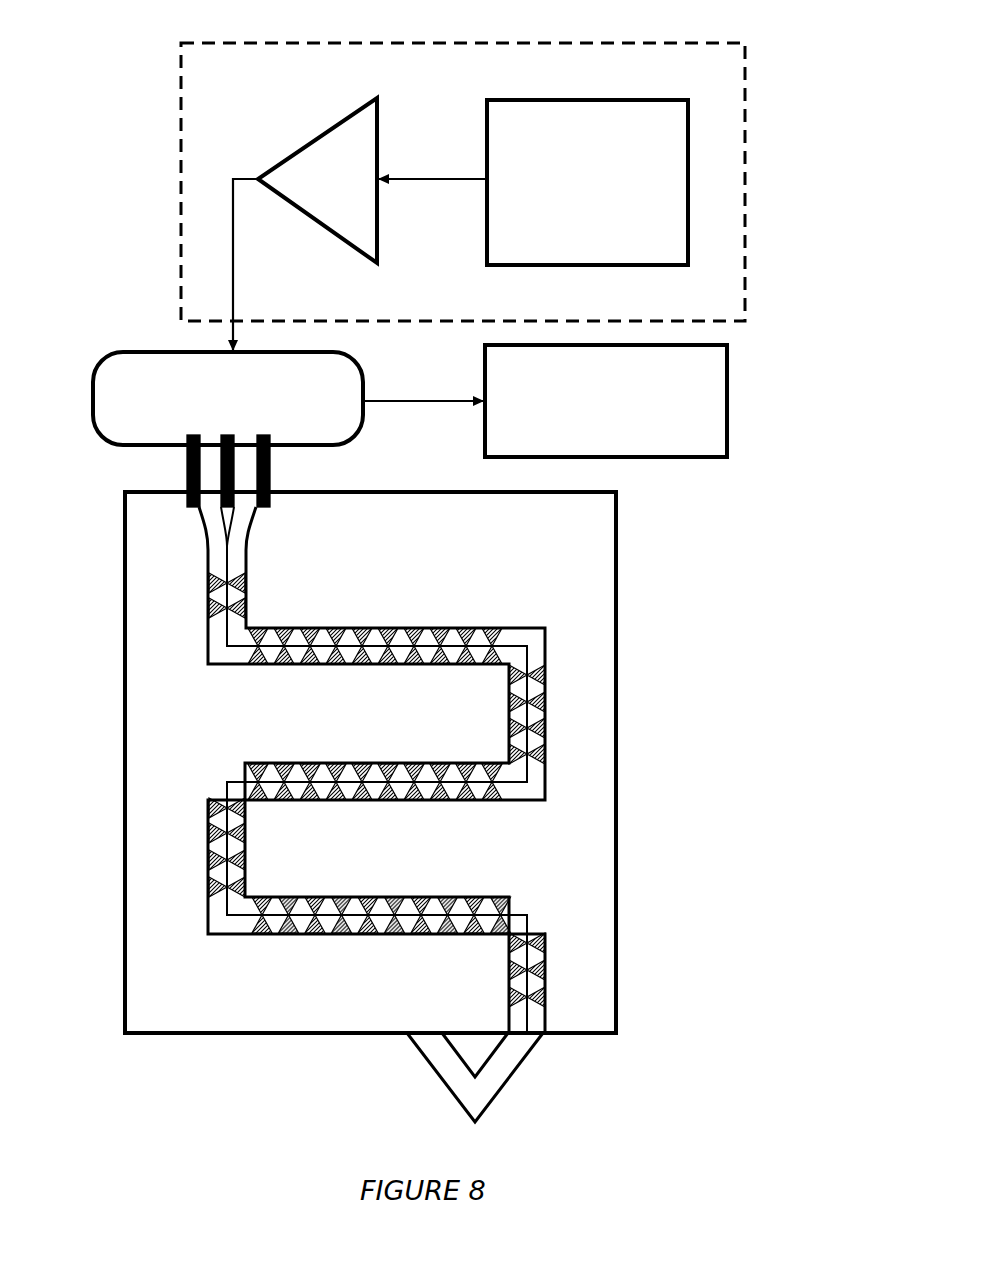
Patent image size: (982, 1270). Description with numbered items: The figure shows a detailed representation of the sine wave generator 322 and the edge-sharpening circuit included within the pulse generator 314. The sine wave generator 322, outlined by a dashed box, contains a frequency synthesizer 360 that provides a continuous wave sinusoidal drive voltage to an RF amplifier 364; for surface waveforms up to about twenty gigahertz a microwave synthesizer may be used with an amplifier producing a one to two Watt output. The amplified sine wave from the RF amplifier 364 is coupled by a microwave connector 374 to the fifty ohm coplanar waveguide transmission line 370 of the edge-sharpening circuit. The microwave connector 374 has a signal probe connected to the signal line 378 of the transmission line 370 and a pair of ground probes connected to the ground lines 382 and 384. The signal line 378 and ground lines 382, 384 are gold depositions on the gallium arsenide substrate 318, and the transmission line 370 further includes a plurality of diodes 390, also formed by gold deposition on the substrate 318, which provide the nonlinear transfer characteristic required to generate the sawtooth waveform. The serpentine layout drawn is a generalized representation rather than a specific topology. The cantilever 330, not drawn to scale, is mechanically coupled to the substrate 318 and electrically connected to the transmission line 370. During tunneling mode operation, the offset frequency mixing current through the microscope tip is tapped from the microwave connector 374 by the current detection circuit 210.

The sine wave generator 322 is at (754, 226).
The RF amplifier 364 is at (365, 143).
The frequency synthesizer 360 is at (586, 118).
The microwave connector 374 is at (153, 360).
The current detection circuit 210 is at (668, 415).
The pulse generator 314 is at (732, 592).
The substrate 318 is at (624, 836).
The coplanar waveguide transmission line 370 is at (303, 774).
The diodes 390 is at (208, 808).
The signal line 378 is at (222, 904).
The ground line 382 is at (206, 921).
The ground line 384 is at (253, 898).
The cantilever 330 is at (483, 1103).